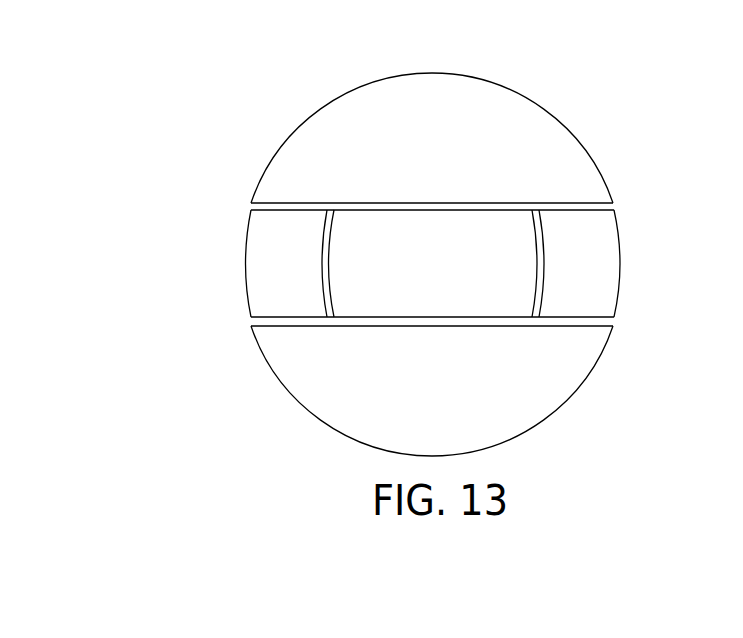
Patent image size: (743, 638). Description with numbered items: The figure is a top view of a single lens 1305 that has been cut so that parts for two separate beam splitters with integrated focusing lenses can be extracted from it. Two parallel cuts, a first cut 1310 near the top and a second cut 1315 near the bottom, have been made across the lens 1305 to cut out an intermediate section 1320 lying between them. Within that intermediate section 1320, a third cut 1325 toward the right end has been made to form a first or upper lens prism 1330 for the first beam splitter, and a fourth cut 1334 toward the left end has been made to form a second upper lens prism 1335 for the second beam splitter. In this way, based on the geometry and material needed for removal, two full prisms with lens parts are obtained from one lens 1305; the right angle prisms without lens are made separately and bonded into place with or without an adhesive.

The lens 1305 is at (297, 103).
The first cut 1310 is at (613, 203).
The second cut 1315 is at (612, 322).
The intermediate section 1320 is at (628, 235).
The third cut 1325 is at (540, 292).
The fourth cut 1334 is at (320, 287).
The second upper lens prism 1335 is at (312, 276).
The first upper lens prism 1330 is at (609, 276).